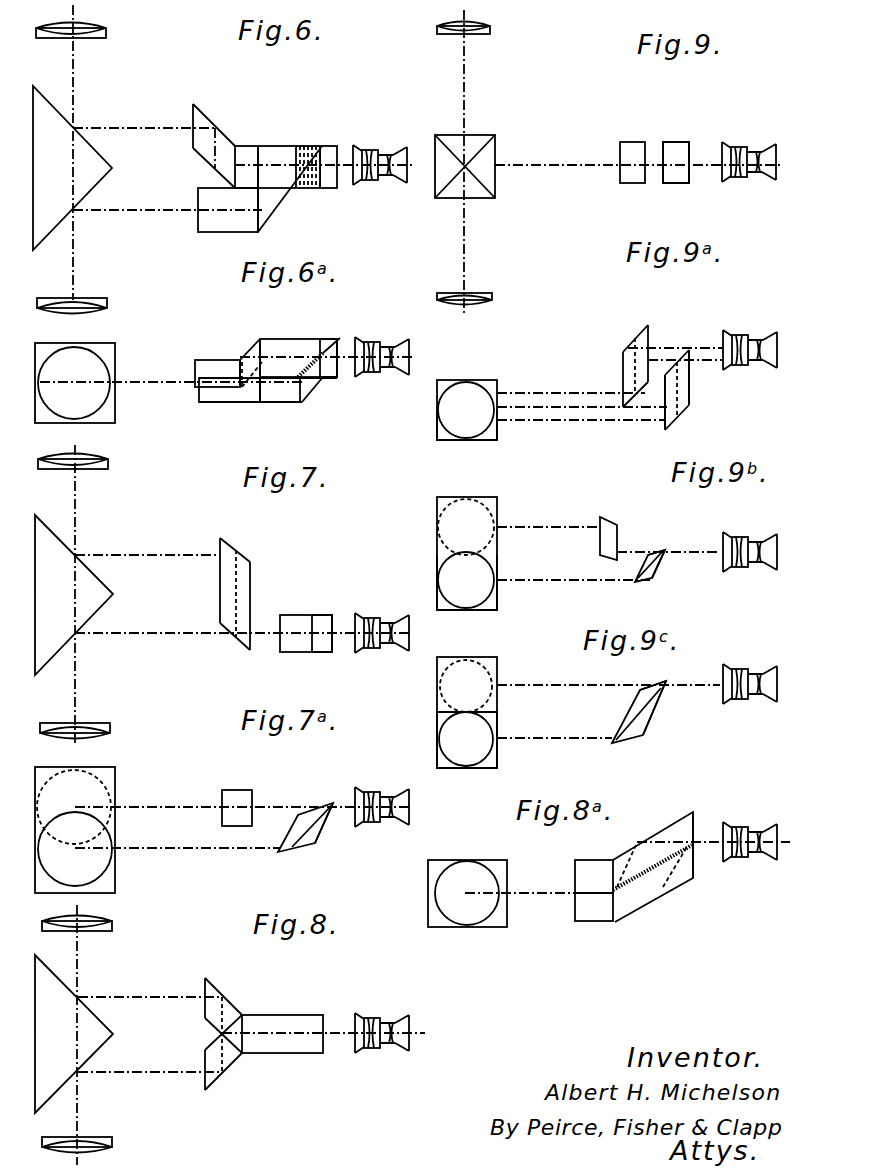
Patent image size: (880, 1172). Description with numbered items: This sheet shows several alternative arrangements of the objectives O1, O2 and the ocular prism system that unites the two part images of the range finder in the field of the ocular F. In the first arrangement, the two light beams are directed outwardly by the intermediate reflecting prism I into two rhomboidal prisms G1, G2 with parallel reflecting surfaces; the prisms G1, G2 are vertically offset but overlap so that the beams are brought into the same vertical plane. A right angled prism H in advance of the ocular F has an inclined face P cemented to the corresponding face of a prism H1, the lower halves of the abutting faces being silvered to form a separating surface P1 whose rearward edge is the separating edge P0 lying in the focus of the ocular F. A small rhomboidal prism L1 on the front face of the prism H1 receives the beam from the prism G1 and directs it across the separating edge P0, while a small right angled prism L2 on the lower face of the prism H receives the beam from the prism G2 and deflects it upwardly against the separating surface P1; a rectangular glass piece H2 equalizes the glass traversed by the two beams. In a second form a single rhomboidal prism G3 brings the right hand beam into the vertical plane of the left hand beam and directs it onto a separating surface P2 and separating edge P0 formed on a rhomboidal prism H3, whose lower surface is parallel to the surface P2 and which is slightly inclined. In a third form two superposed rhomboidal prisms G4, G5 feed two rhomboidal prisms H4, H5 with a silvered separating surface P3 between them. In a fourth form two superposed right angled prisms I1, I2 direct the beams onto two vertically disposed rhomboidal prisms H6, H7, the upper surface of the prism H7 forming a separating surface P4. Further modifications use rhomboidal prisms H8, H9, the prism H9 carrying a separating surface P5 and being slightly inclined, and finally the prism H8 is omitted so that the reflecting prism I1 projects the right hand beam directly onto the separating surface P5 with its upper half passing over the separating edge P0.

In FIG. 6, the objective lens O1 is at (85, 38).
In FIG. 7, the objective lens O1 is at (90, 470).
In FIG. 7A, the objective lens O1 is at (112, 790).
In FIG. 8, the objective lens O1 is at (97, 932).
In FIG. 9, the objective lens O1 is at (472, 34).
In FIG. 9B, the objective lens O1 is at (442, 510).
In FIG. 9C, the objective lens O1 is at (441, 694).
In FIG. 6, the objective lens O2 is at (92, 296).
In FIG. 6A, the objective lens O2 is at (93, 397).
In FIG. 7, the objective lens O2 is at (85, 725).
In FIG. 7A, the objective lens O2 is at (100, 866).
In FIG. 8, the objective lens O2 is at (95, 1138).
In FIG. 8A, the objective lens O2 is at (475, 912).
In FIG. 9, the objective lens O2 is at (481, 288).
In FIG. 9A, the objective lens O2 is at (458, 423).
In FIG. 9B, the objective lens O2 is at (460, 603).
In FIG. 9C, the objective lens O2 is at (487, 730).
In FIG. 6, the intermediate reflecting prism I is at (67, 147).
In FIG. 6A, the intermediate reflecting prism I is at (108, 352).
In FIG. 7, the intermediate reflecting prism I is at (92, 585).
In FIG. 7A, the intermediate reflecting prism I is at (115, 827).
In FIG. 8, the intermediate reflecting prism I is at (40, 1043).
In FIG. 8A, the intermediate reflecting prism I is at (440, 926).
In FIG. 9, the right angled prism I1 is at (472, 142).
In FIG. 9A, the right angled prism I1 is at (489, 381).
In FIG. 9B, the right angled prism I1 is at (498, 507).
In FIG. 9C, the right angled prism I1 is at (498, 665).
In FIG. 9, the right angled prism I2 is at (455, 192).
In FIG. 9A, the right angled prism I2 is at (494, 438).
In FIG. 9B, the right angled prism I2 is at (498, 603).
In FIG. 9C, the right angled prism I2 is at (498, 757).
In FIG. 6, the rhomboidal prism G1 is at (207, 117).
In FIG. 6A, the rhomboidal prism G1 is at (210, 367).
In FIG. 6, the rhomboidal prism G2 is at (268, 217).
In FIG. 6A, the rhomboidal prism G2 is at (280, 390).
In FIG. 7, the rhomboidal prism G3 is at (246, 598).
In FIG. 7A, the rhomboidal prism G3 is at (235, 793).
In FIG. 8, the rhomboidal prism G4 is at (212, 992).
In FIG. 8A, the rhomboidal prism G4 is at (575, 877).
In FIG. 8, the rhomboidal prism G5 is at (212, 1077).
In FIG. 8A, the rhomboidal prism G5 is at (587, 913).
In FIG. 6A, the right angled prism H is at (337, 366).
In FIG. 6, the prism H1 is at (278, 144).
In FIG. 6A, the prism H1 is at (286, 340).
In FIG. 6, the rectangular glass piece H2 is at (210, 226).
In FIG. 6A, the rectangular glass piece H2 is at (220, 393).
In FIG. 7, the rhomboidal prism H3 is at (293, 645).
In FIG. 8, the rhomboidal prism H4 is at (284, 1023).
In FIG. 8A, the rhomboidal prism H4 is at (670, 832).
In FIG. 8A, the rhomboidal prism H5 is at (633, 898).
In FIG. 7A, the rhomboidal prism H6 is at (312, 842).
In FIG. 9, the rhomboidal prism H6 is at (635, 141).
In FIG. 9A, the rhomboidal prism H6 is at (623, 360).
In FIG. 9, the rhomboidal prism H7 is at (676, 141).
In FIG. 9A, the rhomboidal prism H7 is at (688, 395).
In FIG. 9B, the rhomboidal prism H8 is at (600, 542).
In FIG. 9B, the rhomboidal prism H9 is at (654, 572).
In FIG. 9C, the rhomboidal prism H9 is at (650, 720).
In FIG. 6, the small rhomboidal prism L1 is at (247, 146).
In FIG. 6A, the small rhomboidal prism L1 is at (245, 358).
In FIG. 6A, the small right angled prism L2 is at (310, 380).
In FIG. 6A, the inclined face P is at (340, 350).
In FIG. 6, the separating edge P0 is at (320, 177).
In FIG. 6A, the separating edge P0 is at (313, 367).
In FIG. 7, the separating edge P0 is at (332, 628).
In FIG. 7A, the separating edge P0 is at (327, 808).
In FIG. 8A, the separating edge P0 is at (695, 850).
In FIG. 9, the separating edge P0 is at (688, 173).
In FIG. 9A, the separating edge P0 is at (687, 355).
In FIG. 9B, the separating edge P0 is at (662, 558).
In FIG. 9C, the separating edge P0 is at (667, 683).
In FIG. 6, the separating surface P1 is at (309, 146).
In FIG. 6A, the separating surface P1 is at (294, 365).
In FIG. 7, the separating surface P2 is at (318, 627).
In FIG. 7A, the separating surface P2 is at (310, 822).
In FIG. 8A, the separating surface P3 is at (652, 862).
In FIG. 9, the separating surface P4 is at (673, 170).
In FIG. 9A, the separating surface P4 is at (667, 357).
In FIG. 9B, the separating surface P5 is at (655, 550).
In FIG. 9C, the separating surface P5 is at (647, 688).
In FIG. 6, the ocular F is at (373, 148).
In FIG. 6A, the ocular F is at (388, 343).
In FIG. 7, the ocular F is at (388, 622).
In FIG. 7A, the ocular F is at (388, 795).
In FIG. 8, the ocular F is at (373, 1046).
In FIG. 8A, the ocular F is at (743, 862).
In FIG. 9, the ocular F is at (744, 148).
In FIG. 9A, the ocular F is at (747, 336).
In FIG. 9B, the ocular F is at (745, 541).
In FIG. 9C, the ocular F is at (748, 673).